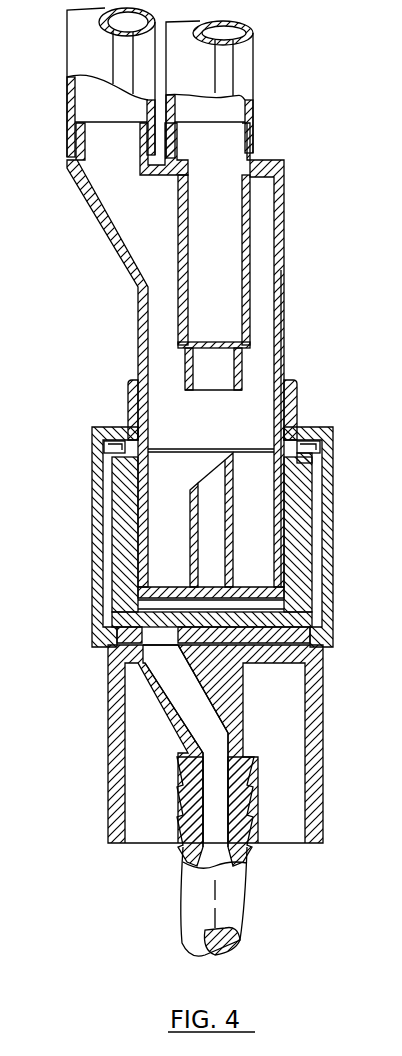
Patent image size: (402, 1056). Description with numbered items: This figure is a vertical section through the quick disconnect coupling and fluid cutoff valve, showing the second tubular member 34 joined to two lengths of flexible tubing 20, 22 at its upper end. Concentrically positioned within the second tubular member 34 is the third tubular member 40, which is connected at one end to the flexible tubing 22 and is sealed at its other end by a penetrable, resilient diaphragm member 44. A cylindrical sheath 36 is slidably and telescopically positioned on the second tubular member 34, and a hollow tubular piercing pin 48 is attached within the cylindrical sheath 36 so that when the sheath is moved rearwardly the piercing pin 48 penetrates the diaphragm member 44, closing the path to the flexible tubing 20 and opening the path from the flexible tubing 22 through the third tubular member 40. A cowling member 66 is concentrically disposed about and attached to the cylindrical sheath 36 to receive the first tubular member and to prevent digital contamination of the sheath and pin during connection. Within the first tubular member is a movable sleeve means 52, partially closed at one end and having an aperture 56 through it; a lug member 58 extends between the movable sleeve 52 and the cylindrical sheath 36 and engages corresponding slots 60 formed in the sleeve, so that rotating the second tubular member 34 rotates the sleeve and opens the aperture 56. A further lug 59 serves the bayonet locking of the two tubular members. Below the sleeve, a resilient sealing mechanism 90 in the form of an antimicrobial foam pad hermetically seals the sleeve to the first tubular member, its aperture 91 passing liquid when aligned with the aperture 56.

The flexible tubing 20 is at (67, 66).
The flexible tubing 22 is at (253, 65).
The second tubular member 34 is at (285, 250).
The third tubular member 40 is at (258, 305).
The penetrable, resilient diaphragm member 44 is at (218, 352).
The cylindrical sheath 36 is at (293, 405).
The movable sleeve means 52 is at (112, 522).
The lug 59 is at (112, 463).
The slots 60 is at (320, 470).
The lug member 58 is at (323, 480).
The cowling member 66 is at (333, 575).
The hollow tubular piercing pin 48 is at (235, 480).
The aperture 56 is at (292, 620).
The resilient sealing mechanism 90 is at (233, 627).
The aperture 91 is at (120, 663).